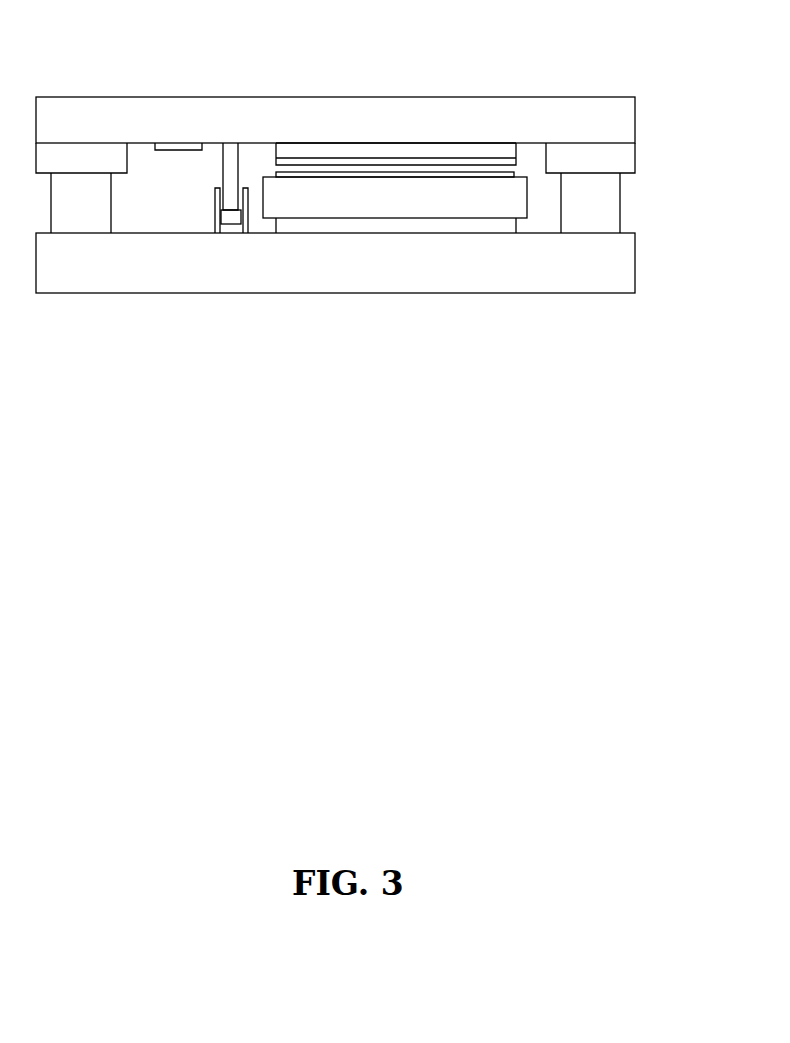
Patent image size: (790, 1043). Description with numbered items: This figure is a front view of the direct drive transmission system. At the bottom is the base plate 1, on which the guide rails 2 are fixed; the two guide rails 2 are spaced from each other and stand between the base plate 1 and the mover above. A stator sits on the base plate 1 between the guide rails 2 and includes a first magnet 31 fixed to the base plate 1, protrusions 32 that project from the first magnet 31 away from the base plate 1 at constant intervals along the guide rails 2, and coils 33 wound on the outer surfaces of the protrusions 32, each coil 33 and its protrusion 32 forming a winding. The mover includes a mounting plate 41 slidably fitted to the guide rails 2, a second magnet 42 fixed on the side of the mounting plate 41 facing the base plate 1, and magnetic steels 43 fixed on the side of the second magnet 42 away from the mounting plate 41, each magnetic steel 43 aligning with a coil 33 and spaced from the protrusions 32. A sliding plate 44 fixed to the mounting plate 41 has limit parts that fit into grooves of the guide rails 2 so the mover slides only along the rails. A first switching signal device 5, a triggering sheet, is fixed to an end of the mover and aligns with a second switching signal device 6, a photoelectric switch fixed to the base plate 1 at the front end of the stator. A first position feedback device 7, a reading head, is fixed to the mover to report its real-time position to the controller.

The base plate 1 is at (598, 273).
The guide rails 2 is at (611, 204).
The first switching signal device 5 is at (230, 150).
The second switching signal device 6 is at (230, 229).
The first position feedback device 7 is at (163, 143).
The first magnet 31 is at (335, 222).
The protrusions 32 is at (415, 175).
The coils 33 is at (493, 202).
The mounting plate 41 is at (62, 119).
The second magnet 42 is at (476, 152).
The magnetic steels 43 is at (315, 164).
The sliding plate 44 is at (587, 152).